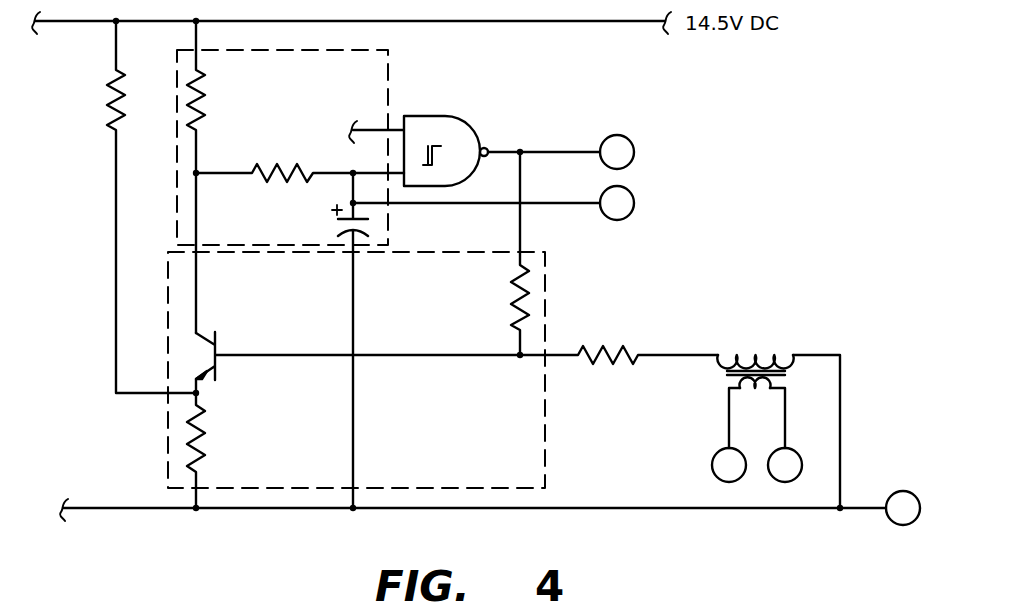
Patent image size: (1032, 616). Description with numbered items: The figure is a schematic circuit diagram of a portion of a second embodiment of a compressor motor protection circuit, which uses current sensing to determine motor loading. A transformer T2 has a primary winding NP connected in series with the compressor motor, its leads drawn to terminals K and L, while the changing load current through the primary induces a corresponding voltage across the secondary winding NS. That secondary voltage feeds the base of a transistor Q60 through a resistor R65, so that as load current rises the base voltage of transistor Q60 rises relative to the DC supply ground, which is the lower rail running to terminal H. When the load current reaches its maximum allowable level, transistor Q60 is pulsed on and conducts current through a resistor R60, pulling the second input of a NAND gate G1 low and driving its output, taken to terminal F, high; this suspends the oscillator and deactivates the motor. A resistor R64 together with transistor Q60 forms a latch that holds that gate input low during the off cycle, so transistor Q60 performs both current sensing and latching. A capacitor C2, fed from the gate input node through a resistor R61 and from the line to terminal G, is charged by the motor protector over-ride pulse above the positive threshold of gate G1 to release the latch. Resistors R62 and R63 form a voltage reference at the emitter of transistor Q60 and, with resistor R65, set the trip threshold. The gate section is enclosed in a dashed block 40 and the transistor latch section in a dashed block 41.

The resistor R60 is at (218, 177).
The resistor R61 is at (300, 161).
The resistor R62 is at (126, 207).
The resistor R63 is at (219, 450).
The resistor R64 is at (497, 253).
The resistor R65 is at (619, 344).
The capacitor C2 is at (337, 340).
The transistor Q60 is at (358, 366).
The NAND gate G1 is at (476, 138).
The transformer T2 is at (764, 414).
The secondary winding NS is at (755, 344).
The primary winding NP is at (755, 403).
The gate circuit block 40 is at (388, 69).
The transistor drive circuit block 41 is at (545, 288).
The terminal F is at (617, 152).
The terminal G is at (617, 203).
The terminal H is at (903, 508).
The terminal K is at (729, 465).
The terminal L is at (785, 465).